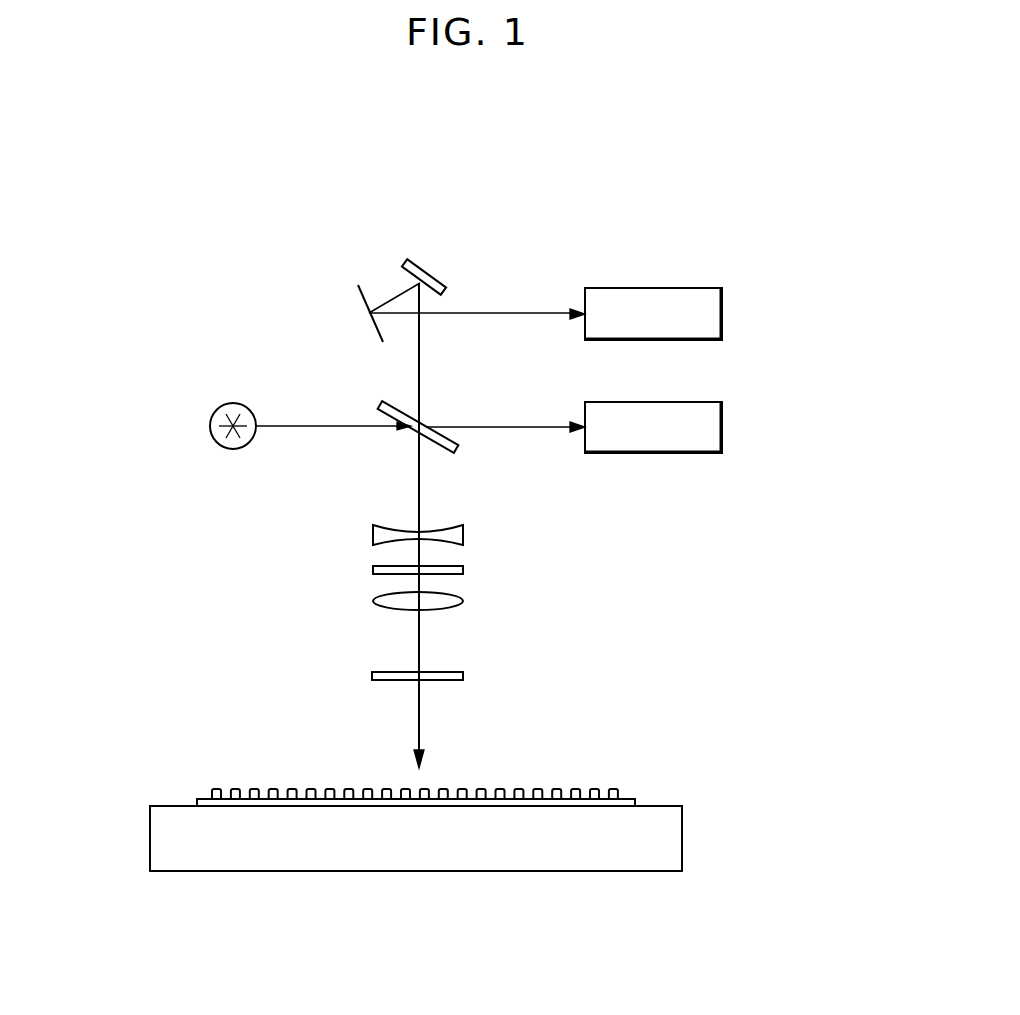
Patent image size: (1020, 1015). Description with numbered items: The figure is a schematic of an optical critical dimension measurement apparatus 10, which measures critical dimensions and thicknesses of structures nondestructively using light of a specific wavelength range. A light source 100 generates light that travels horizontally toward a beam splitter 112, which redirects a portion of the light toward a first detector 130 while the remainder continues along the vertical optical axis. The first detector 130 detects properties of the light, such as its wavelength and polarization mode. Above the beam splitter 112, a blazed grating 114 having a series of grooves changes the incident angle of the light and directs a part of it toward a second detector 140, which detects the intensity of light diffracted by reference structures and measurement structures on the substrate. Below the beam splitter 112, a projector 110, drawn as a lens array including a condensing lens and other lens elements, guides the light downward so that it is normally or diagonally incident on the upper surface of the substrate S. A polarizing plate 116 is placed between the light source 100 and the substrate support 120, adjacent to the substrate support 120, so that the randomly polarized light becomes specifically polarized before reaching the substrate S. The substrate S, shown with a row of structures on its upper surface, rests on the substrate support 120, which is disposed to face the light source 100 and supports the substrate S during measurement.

The optical critical dimension (OCD) measurement apparatus 10 is at (434, 190).
The light source 100 is at (240, 406).
The projector 110 is at (470, 523).
The beam splitter 112 is at (427, 423).
The blazed grating 114 is at (428, 269).
The polarizing plate 116 is at (452, 672).
The substrate support 120 is at (683, 841).
The first detector 130 is at (667, 402).
The second detector 140 is at (667, 288).
The substrate S is at (637, 803).